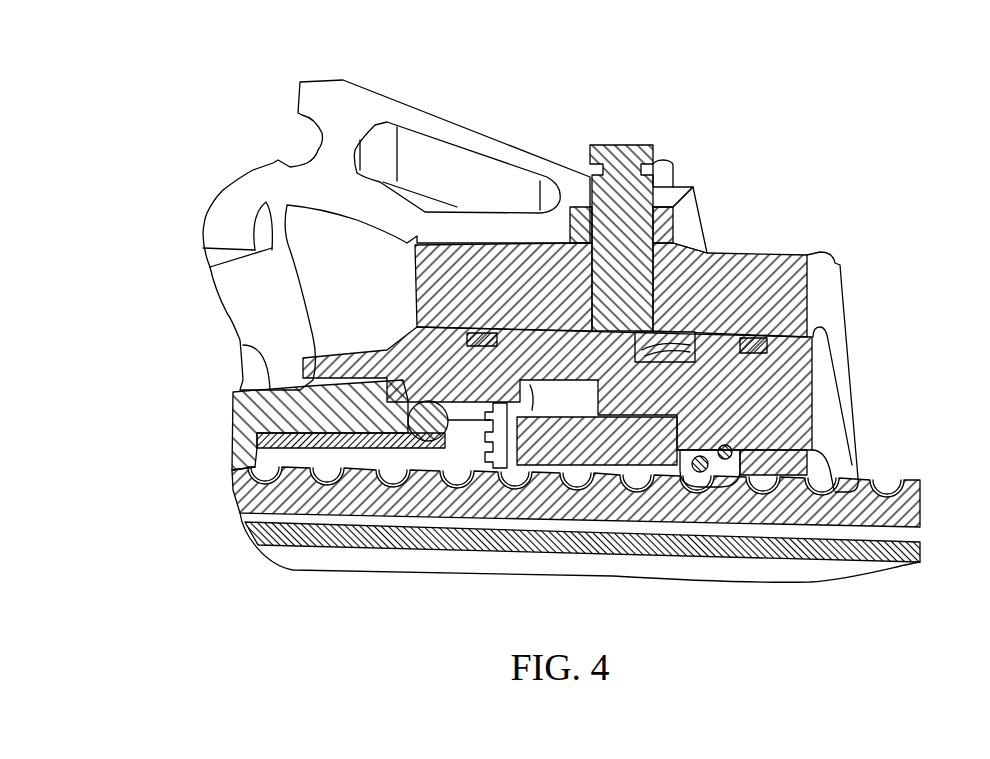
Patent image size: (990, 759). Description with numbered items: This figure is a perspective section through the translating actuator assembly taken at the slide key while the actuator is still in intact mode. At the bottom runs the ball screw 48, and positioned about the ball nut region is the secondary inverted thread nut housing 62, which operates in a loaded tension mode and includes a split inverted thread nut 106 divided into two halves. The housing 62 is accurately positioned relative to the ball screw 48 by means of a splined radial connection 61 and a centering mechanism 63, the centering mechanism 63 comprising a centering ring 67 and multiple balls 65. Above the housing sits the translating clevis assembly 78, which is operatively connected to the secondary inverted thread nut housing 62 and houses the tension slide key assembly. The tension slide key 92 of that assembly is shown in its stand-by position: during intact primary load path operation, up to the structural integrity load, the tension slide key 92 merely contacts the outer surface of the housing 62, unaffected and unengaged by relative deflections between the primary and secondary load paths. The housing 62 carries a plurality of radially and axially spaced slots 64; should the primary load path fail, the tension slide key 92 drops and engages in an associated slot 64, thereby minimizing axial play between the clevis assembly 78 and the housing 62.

The translating clevis assembly 78 is at (453, 128).
The tension slide key 92 is at (621, 167).
The slot 64 is at (693, 330).
The secondary inverted thread nut housing 62 is at (810, 372).
The splined radial connection 61 is at (292, 386).
The centering mechanism 63 is at (240, 505).
The balls 65 is at (320, 456).
The centering ring 67 is at (401, 456).
The ball screw 48 is at (916, 480).
The split inverted thread nut 106 is at (653, 472).